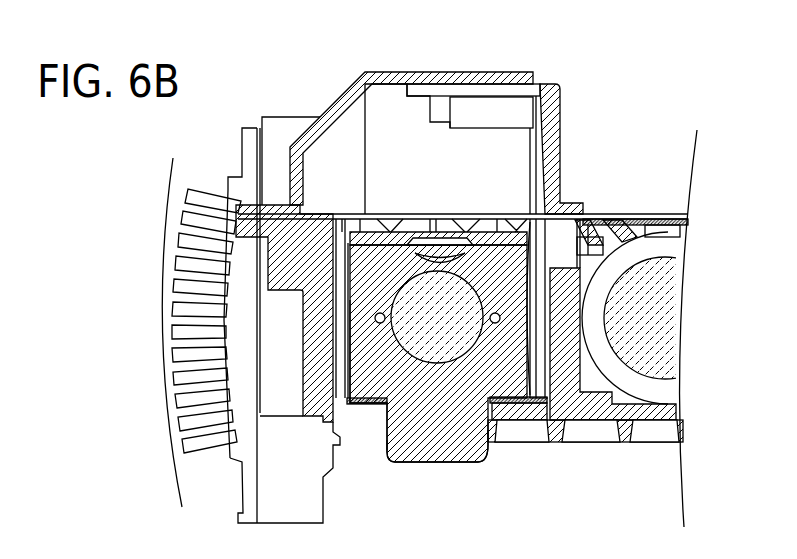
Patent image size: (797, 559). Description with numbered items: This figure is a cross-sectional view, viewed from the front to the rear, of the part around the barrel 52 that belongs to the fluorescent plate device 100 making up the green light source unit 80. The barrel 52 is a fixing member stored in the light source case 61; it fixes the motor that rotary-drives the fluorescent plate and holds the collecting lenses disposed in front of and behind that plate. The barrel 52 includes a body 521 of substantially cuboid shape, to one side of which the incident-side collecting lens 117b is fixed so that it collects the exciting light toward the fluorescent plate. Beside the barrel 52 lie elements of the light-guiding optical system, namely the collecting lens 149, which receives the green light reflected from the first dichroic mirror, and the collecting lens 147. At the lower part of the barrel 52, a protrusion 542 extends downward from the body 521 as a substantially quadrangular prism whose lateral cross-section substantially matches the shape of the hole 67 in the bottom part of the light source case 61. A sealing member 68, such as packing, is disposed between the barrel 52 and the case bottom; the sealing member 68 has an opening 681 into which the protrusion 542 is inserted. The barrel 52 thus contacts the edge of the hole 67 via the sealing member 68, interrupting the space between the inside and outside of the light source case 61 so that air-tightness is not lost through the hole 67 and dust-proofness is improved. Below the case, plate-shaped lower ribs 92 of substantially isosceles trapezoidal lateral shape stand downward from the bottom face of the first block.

The fluorescent plate device 100 is at (381, 70).
The green light source unit 80 is at (561, 149).
The collecting lens 117b is at (541, 268).
The collecting lens 149 is at (543, 268).
The barrel 52 is at (360, 272).
The light source case 61 is at (295, 304).
The body 521 is at (355, 378).
The collecting lens 147 is at (660, 310).
The opening 681 is at (545, 362).
The sealing member 68 is at (357, 403).
The protrusion 542 is at (438, 463).
The hole 67 is at (495, 410).
The lower ribs 92 is at (588, 436).